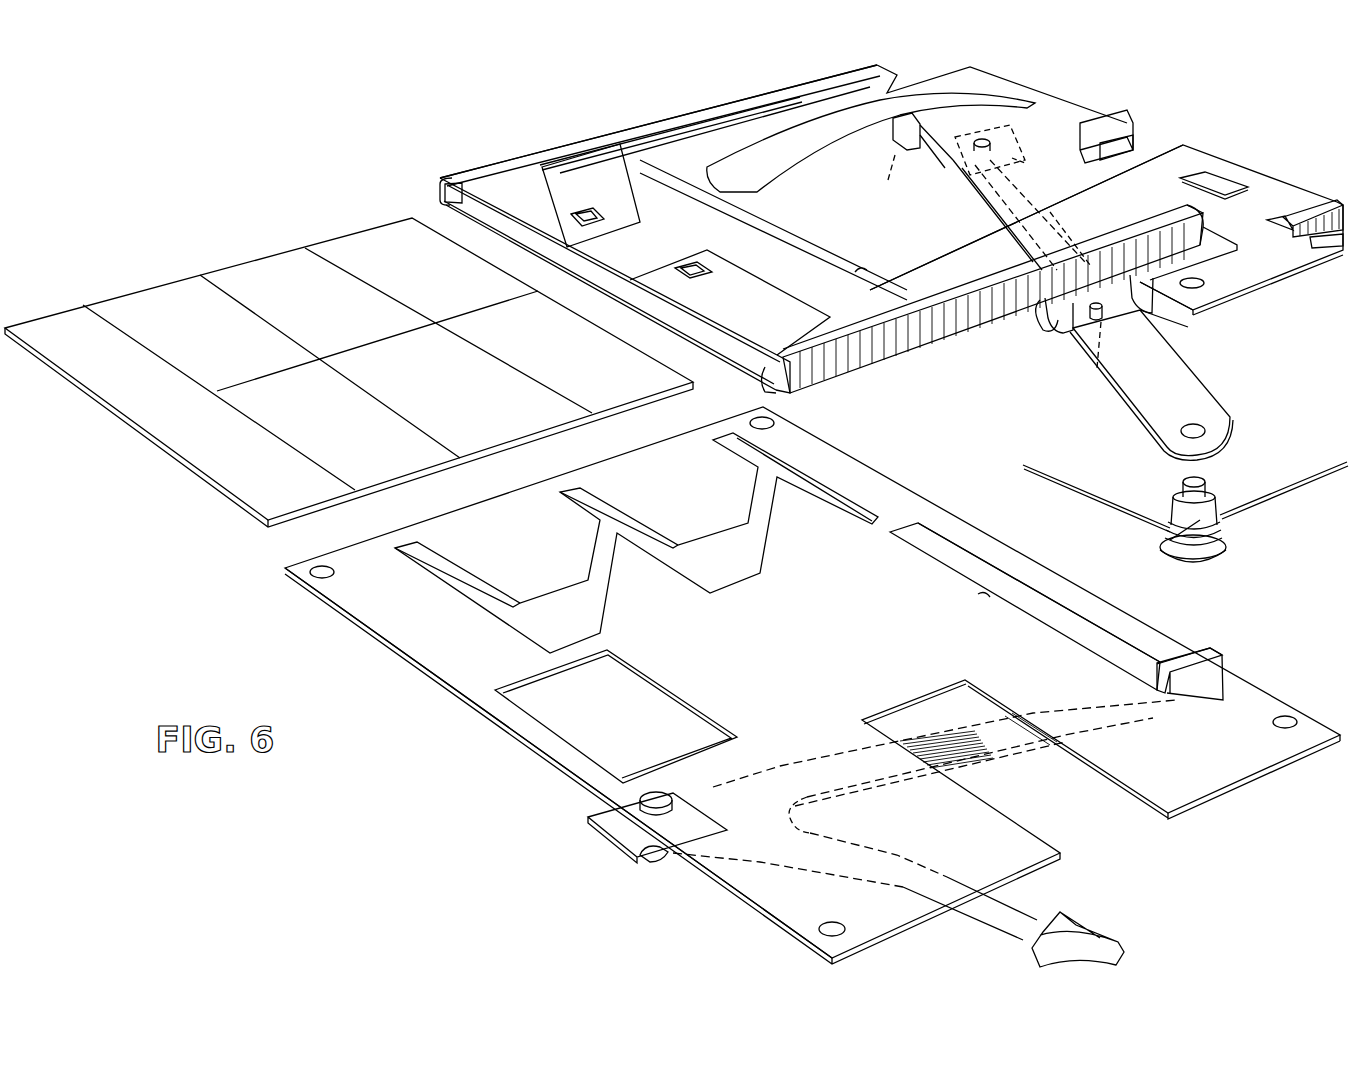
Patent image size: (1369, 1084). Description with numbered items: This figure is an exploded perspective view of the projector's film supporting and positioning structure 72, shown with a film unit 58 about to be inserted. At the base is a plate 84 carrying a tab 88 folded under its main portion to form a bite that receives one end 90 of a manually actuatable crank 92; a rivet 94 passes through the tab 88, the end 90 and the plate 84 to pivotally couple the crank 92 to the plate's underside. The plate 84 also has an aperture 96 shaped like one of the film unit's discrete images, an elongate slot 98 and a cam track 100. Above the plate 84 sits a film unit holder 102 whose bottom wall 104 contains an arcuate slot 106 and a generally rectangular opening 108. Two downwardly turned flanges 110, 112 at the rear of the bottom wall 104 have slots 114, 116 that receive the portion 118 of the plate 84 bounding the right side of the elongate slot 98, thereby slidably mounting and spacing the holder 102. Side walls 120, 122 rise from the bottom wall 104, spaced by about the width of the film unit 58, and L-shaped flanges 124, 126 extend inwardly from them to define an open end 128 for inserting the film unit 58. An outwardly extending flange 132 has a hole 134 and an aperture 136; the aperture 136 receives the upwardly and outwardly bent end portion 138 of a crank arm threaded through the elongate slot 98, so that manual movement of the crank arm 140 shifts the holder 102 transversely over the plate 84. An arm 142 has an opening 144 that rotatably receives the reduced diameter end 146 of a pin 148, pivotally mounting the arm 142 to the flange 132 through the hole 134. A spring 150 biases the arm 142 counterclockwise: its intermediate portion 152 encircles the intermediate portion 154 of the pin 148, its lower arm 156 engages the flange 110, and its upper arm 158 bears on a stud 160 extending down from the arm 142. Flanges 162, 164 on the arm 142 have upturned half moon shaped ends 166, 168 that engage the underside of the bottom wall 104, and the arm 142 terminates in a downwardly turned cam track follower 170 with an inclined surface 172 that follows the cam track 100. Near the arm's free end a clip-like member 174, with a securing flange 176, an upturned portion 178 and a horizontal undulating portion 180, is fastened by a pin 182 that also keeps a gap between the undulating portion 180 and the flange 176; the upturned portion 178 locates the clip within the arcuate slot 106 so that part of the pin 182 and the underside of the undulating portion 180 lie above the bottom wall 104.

The film unit 58 is at (203, 262).
The film supporting and positioning structure 72 is at (335, 632).
The plate 84 is at (425, 655).
The tab 88 is at (665, 862).
The end of crank 90 is at (625, 850).
The crank 92 is at (978, 750).
The rivet 94 is at (620, 805).
The aperture 96 is at (557, 733).
The elongate slot 98 is at (978, 597).
The cam track 100 is at (690, 525).
The film unit holder 102 is at (608, 108).
The bottom wall 104 is at (906, 232).
The arcuate slot 106 is at (800, 160).
The rectangular opening 108 is at (866, 272).
The downwardly turned flange 110 is at (1335, 205).
The downwardly turned flange 112 is at (1130, 140).
The slot 114 is at (1340, 245).
The slot 116 is at (1150, 150).
The portion of plate 118 is at (1015, 560).
The side wall 120 is at (905, 345).
The side wall 122 is at (440, 190).
The L-shaped flange 124 is at (745, 281).
The L-shaped flange 126 is at (575, 200).
The open end 128 is at (785, 392).
The outwardly extending flange 132 is at (1258, 290).
The hole 134 is at (1200, 290).
The aperture 136 is at (1208, 180).
The bent end portion 138 is at (1225, 655).
The arm of crank 140 is at (1090, 925).
The arm 142 is at (1190, 383).
The opening 144 is at (1203, 428).
The reduced diameter end 146 is at (1200, 480).
The pin 148 is at (1222, 540).
The spring 150 is at (1150, 553).
The intermediate portion of spring 152 is at (1222, 556).
The intermediate portion of pin 154 is at (1172, 505).
The lower arm of spring 156 is at (1310, 467).
The upper arm of spring 158 is at (1040, 475).
The stud 160 is at (1095, 370).
The outwardly extending flange 162 is at (1066, 340).
The outwardly extending flange 164 is at (1175, 328).
The half moon shaped end 166 is at (1160, 315).
The half moon shaped end 168 is at (1040, 325).
The cam track follower 170 is at (880, 128).
The inclined surface 172 is at (885, 180).
The clip-like member 174 is at (1045, 178).
The flange 176 is at (1050, 217).
The upturned portion 178 is at (1028, 165).
The undulating portion 180 is at (1006, 140).
The pin 182 is at (992, 150).